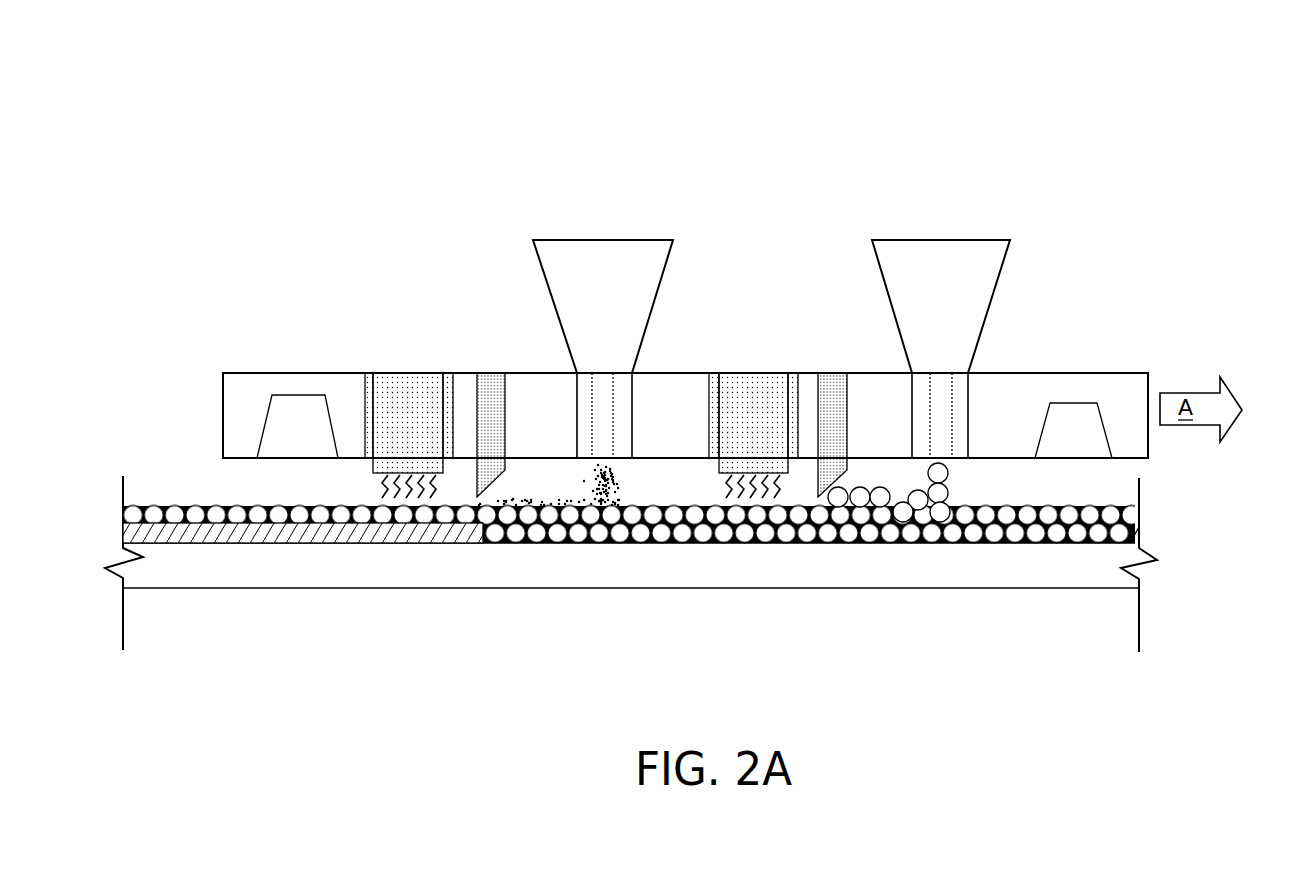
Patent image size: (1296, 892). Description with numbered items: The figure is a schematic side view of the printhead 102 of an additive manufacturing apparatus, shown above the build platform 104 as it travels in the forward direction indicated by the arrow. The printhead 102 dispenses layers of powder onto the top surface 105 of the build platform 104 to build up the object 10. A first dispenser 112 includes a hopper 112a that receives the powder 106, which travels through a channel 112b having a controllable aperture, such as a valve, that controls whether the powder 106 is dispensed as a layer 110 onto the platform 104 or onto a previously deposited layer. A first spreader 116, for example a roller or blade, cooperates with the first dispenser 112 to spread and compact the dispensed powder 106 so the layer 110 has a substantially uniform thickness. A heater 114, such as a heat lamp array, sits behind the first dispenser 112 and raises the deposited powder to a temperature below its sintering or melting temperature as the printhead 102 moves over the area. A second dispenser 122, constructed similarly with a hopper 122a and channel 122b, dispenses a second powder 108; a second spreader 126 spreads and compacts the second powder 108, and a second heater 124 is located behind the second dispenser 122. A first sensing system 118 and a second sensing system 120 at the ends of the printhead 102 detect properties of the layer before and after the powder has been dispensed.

The object 10 is at (287, 527).
The printhead 102 is at (238, 349).
The build platform 104 is at (440, 579).
The top surface 105 is at (1133, 537).
The powder 106 is at (948, 489).
The second powder 108 is at (613, 488).
The layer 110 is at (110, 515).
The first dispenser 112 is at (971, 318).
The hopper 112a is at (955, 302).
The channel 112b is at (948, 418).
The heater 114 is at (780, 435).
The first spreader 116 is at (822, 380).
The first sensing system 118 is at (1091, 445).
The second sensing system 120 is at (308, 450).
The second dispenser 122 is at (600, 309).
The hopper 122a is at (630, 304).
The channel 122b is at (616, 423).
The second heater 124 is at (423, 435).
The second spreader 126 is at (493, 380).